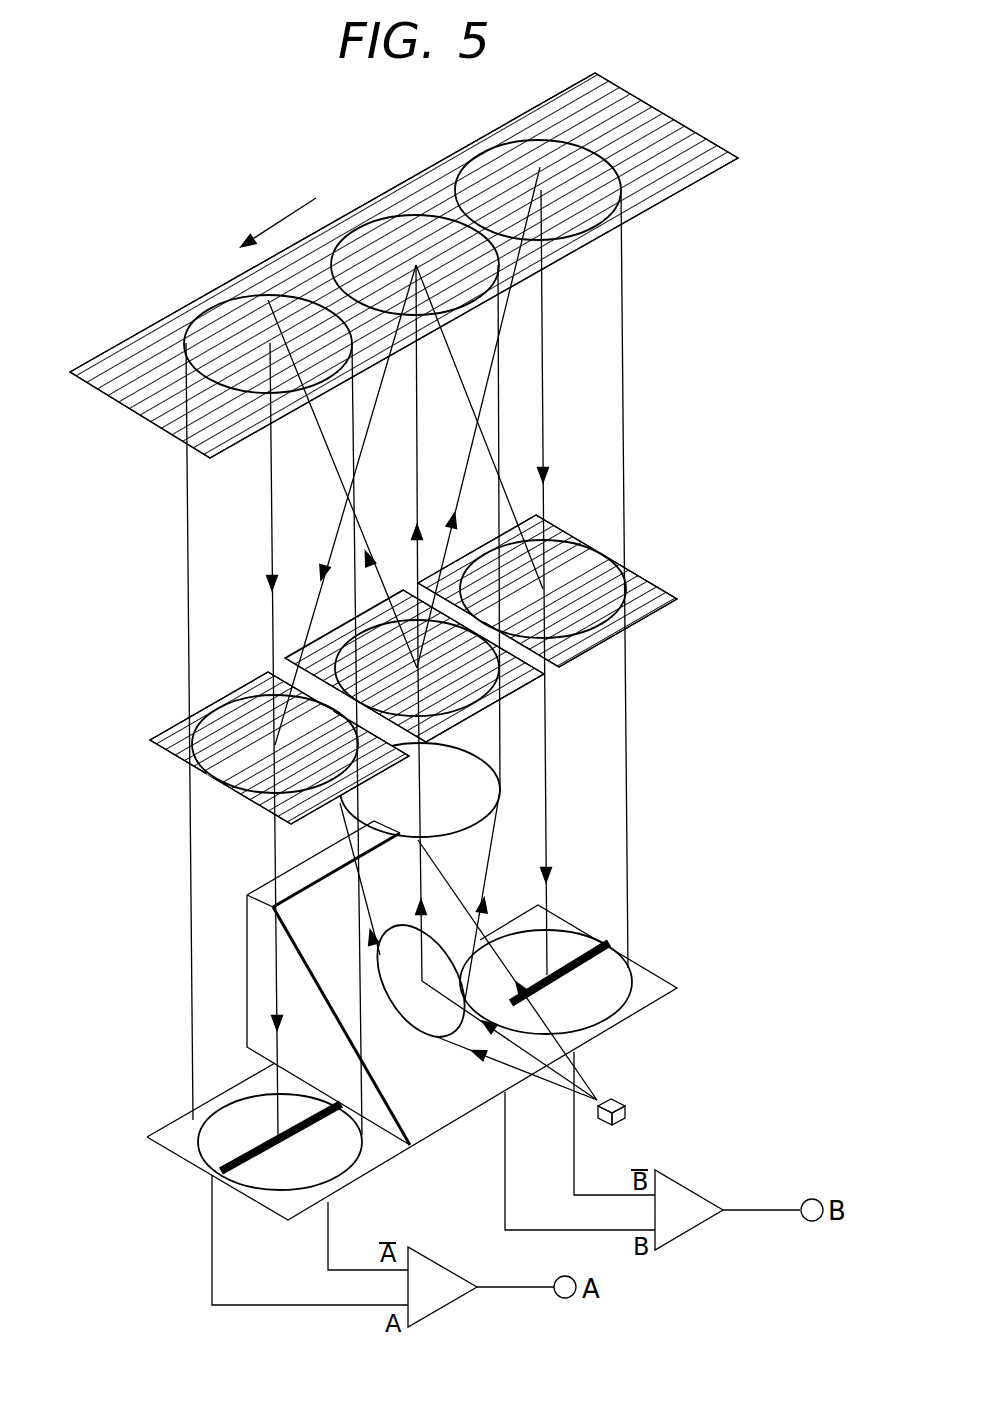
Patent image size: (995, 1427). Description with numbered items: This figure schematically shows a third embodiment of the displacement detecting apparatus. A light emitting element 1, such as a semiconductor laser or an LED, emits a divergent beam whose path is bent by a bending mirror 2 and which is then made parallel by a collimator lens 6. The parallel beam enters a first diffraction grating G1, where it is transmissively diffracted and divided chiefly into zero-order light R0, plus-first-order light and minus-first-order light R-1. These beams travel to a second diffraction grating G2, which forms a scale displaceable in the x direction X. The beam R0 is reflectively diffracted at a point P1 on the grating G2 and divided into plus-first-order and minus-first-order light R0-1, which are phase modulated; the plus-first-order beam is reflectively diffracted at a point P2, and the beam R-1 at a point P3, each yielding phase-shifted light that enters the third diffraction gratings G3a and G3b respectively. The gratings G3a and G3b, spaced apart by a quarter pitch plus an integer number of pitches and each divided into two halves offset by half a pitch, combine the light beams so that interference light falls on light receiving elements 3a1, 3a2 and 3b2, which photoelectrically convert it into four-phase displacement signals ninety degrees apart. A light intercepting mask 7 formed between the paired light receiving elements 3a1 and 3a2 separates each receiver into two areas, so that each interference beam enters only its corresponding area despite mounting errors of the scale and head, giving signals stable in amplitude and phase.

The second diffraction grating G2 is at (118, 402).
The first diffraction grating G1 is at (330, 640).
The third diffraction grating G3a is at (213, 780).
The third diffraction grating G3b is at (595, 530).
The point on the second diffraction grating P1 is at (390, 205).
The point on the second diffraction grating P2 is at (505, 140).
The point on the second diffraction grating P3 is at (232, 292).
The x direction X is at (278, 222).
The 0-order diffracted light R0 is at (417, 508).
The -1st-order diffracted light R-1 is at (313, 440).
The -1st-order diffracted light R0-1 is at (390, 440).
The collimator lens 6 is at (480, 793).
The bending mirror 2 is at (468, 1097).
The light emitting element 1 is at (624, 1113).
The light receiving element 3a1 is at (175, 1133).
The light receiving element 3a2 is at (363, 1178).
The light receiving element 3b2 is at (537, 927).
The light intercepting mask 7 is at (600, 948).